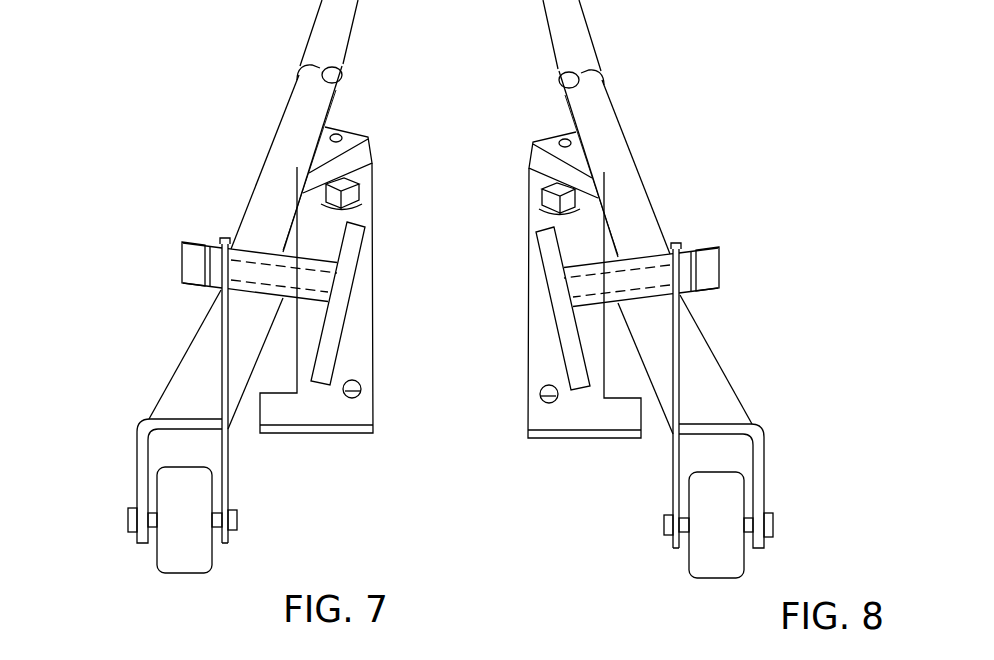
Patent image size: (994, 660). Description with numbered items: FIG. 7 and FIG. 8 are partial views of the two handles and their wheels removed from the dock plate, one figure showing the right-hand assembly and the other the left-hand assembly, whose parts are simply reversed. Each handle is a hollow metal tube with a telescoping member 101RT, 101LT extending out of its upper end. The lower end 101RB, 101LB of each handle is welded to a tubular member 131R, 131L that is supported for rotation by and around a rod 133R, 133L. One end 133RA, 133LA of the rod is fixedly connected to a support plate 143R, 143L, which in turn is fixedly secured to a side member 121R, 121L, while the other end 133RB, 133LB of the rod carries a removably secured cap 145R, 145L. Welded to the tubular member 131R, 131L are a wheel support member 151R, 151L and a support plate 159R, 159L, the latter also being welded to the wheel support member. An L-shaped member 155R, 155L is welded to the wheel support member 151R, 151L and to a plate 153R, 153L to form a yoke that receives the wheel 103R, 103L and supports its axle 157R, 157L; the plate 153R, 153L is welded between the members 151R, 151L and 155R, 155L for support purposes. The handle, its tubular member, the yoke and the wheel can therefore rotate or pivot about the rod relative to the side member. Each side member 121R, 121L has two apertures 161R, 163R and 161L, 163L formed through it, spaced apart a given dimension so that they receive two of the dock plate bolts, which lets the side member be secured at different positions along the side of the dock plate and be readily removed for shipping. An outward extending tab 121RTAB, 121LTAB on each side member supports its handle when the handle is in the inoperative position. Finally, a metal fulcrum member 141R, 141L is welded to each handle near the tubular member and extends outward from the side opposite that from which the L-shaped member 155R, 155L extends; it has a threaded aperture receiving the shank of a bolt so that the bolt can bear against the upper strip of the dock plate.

In FIG. 7, the telescoping member 101RT is at (313, 32).
In FIG. 7, the handle end 101RB is at (238, 228).
In FIG. 7, the tubular member 131R is at (277, 247).
In FIG. 7, the fulcrum member 141R is at (340, 124).
In FIG. 7, the support plate 143R is at (352, 127).
In FIG. 7, the aperture 163R is at (375, 165).
In FIG. 7, the side member 121R is at (374, 392).
In FIG. 7, the tab 121RTAB is at (272, 437).
In FIG. 7, the aperture 161R is at (352, 398).
In FIG. 7, the rod 133R is at (278, 272).
In FIG. 7, the rod end 133RA is at (372, 245).
In FIG. 7, the rod end 133RB is at (182, 243).
In FIG. 7, the cap 145R is at (275, 240).
In FIG. 7, the wheel support member 151R is at (222, 312).
In FIG. 7, the plate 153R is at (212, 350).
In FIG. 7, the support plate 159R is at (240, 370).
In FIG. 7, the L-shaped member 155R is at (143, 428).
In FIG. 7, the axle 157R is at (150, 517).
In FIG. 7, the wheel 103R is at (202, 578).
In FIG. 8, the telescoping member 101LT is at (593, 32).
In FIG. 8, the handle end 101LB is at (664, 232).
In FIG. 8, the tubular member 131L is at (626, 252).
In FIG. 8, the fulcrum member 141L is at (548, 133).
In FIG. 8, the support plate 143L is at (553, 127).
In FIG. 8, the aperture 163L is at (527, 205).
In FIG. 8, the side member 121L is at (524, 400).
In FIG. 8, the tab 121LTAB is at (612, 440).
In FIG. 8, the aperture 161L is at (549, 404).
In FIG. 8, the rod 133L is at (630, 277).
In FIG. 8, the rod end 133LA is at (568, 284).
In FIG. 8, the rod end 133LB is at (688, 276).
In FIG. 8, the cap 145L is at (628, 245).
In FIG. 8, the wheel support member 151L is at (680, 358).
In FIG. 8, the plate 153L is at (700, 388).
In FIG. 8, the support plate 159L is at (662, 378).
In FIG. 8, the L-shaped member 155L is at (766, 465).
In FIG. 8, the axle 157L is at (767, 520).
In FIG. 8, the wheel 103L is at (713, 583).